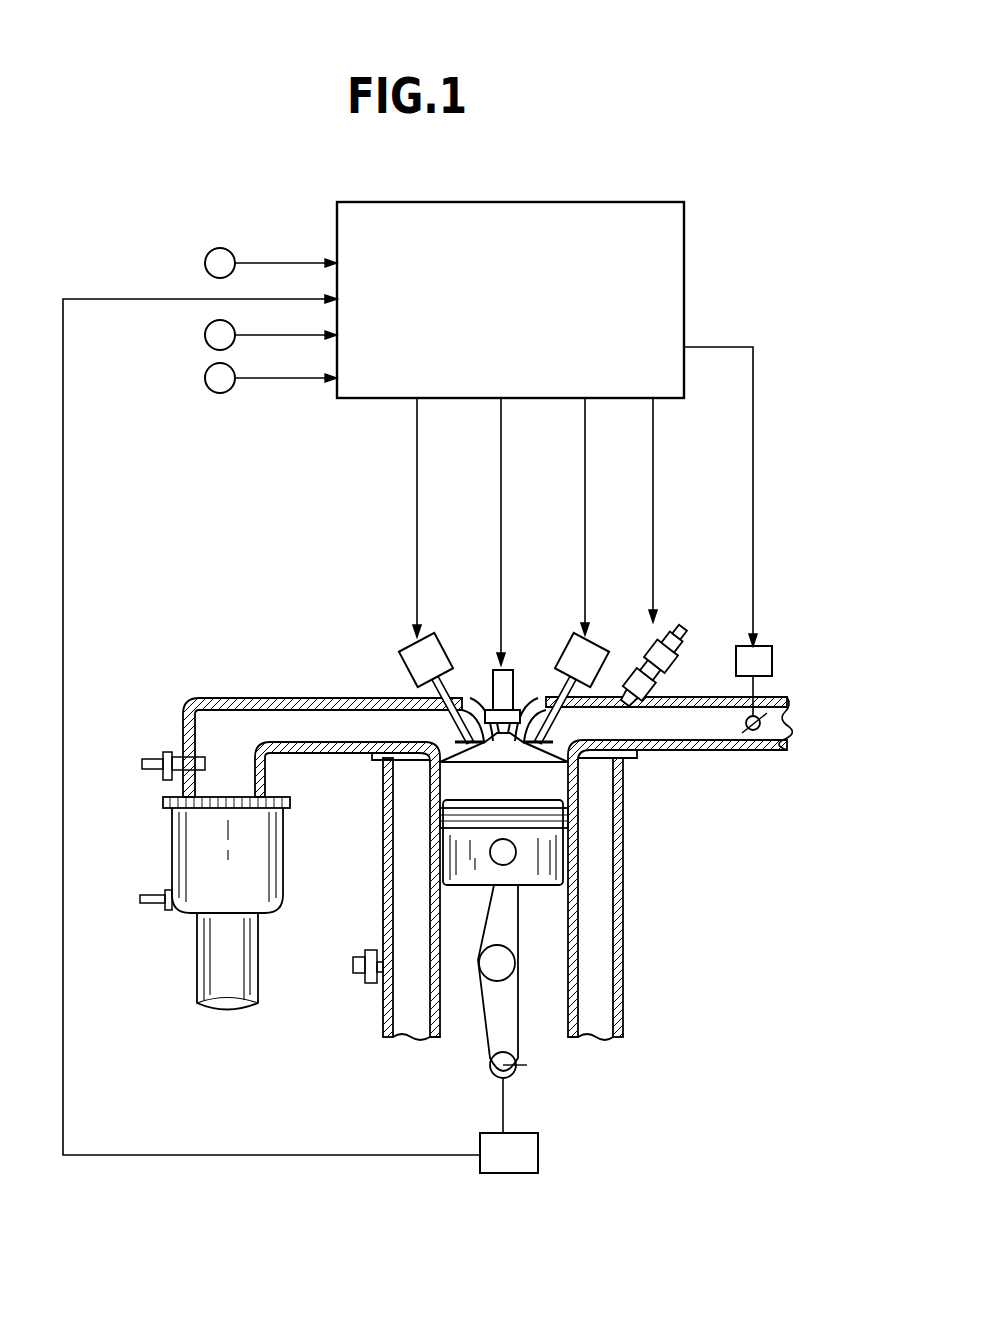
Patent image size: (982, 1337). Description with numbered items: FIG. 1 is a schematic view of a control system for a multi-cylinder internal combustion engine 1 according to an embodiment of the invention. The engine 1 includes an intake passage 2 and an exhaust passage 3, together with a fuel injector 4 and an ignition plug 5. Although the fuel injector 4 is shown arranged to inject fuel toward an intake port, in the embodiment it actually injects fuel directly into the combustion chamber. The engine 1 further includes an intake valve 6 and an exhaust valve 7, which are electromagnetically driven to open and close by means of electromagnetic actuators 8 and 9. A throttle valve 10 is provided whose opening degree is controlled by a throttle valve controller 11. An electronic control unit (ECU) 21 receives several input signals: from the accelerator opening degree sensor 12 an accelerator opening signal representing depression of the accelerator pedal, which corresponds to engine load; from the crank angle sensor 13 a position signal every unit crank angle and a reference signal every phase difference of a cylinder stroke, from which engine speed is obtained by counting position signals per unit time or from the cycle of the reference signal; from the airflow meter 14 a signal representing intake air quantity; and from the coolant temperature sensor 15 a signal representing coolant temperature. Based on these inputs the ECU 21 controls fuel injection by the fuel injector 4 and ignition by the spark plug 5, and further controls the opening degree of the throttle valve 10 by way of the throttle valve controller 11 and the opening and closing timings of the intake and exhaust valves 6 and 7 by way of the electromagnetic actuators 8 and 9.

The multi-cylinder internal combustion engine 1 is at (284, 664).
The intake passage 2 is at (700, 712).
The exhaust passage 3 is at (320, 715).
The fuel injector 4 is at (665, 625).
The ignition plug 5 is at (490, 690).
The intake valve 6 is at (560, 685).
The exhaust valve 7 is at (418, 692).
The electromagnetic actuator 8 is at (590, 637).
The electromagnetic actuator 9 is at (430, 637).
The throttle valve 10 is at (768, 730).
The throttle valve controller 11 is at (765, 645).
The accelerator opening degree sensor 12 is at (206, 254).
The crank angle sensor 13 is at (540, 1143).
The airflow meter 14 is at (205, 338).
The coolant temperature sensor 15 is at (205, 381).
The electronic control unit (ECU) 21 is at (530, 200).